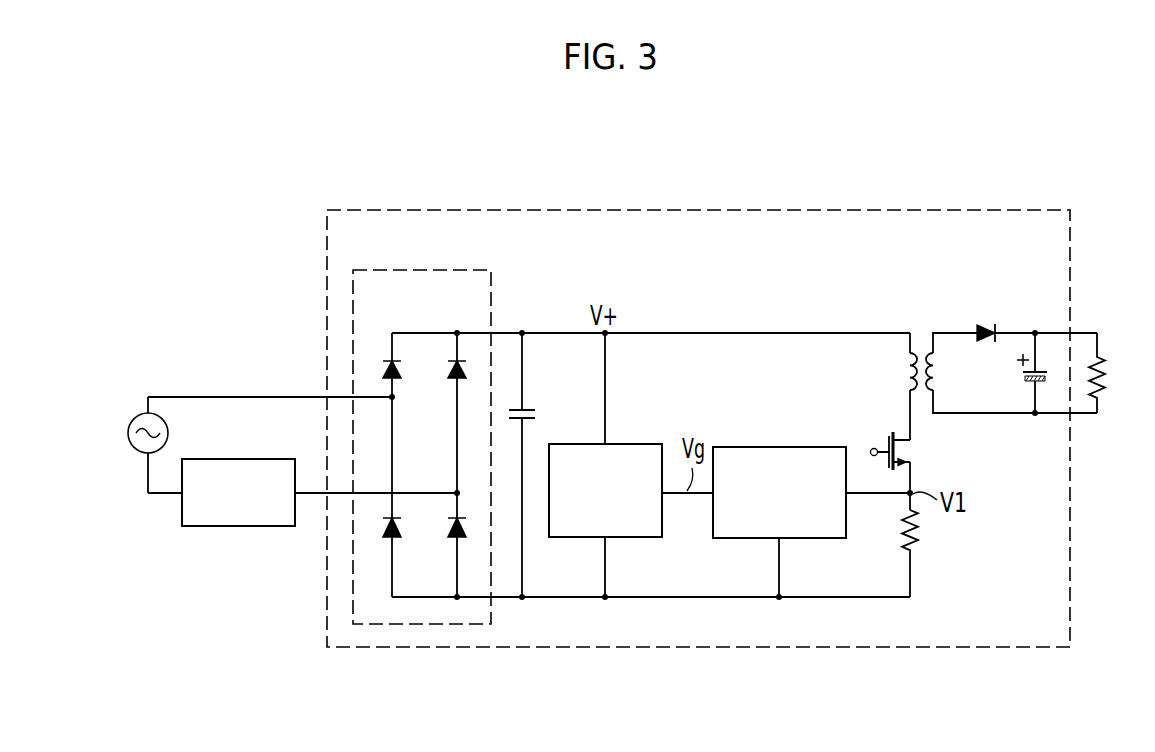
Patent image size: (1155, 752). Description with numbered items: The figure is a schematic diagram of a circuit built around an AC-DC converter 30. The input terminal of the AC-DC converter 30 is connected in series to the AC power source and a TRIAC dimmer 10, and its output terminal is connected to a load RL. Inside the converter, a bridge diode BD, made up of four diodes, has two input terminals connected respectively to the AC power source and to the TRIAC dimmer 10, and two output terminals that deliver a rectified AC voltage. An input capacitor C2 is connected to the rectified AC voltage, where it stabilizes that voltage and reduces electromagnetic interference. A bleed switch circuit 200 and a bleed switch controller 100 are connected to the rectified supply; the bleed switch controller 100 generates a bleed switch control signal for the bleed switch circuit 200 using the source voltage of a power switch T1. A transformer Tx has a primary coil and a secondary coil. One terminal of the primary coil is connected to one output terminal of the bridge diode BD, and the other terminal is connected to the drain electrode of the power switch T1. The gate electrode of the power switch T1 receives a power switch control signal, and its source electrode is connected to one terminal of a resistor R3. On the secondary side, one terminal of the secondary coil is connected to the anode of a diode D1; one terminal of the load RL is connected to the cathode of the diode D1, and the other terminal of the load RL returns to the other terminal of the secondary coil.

The TRIAC dimmer 10 is at (203, 527).
The AC-DC converter 30 is at (898, 209).
The bleed switch controller 100 is at (800, 447).
The bleed switch circuit 200 is at (558, 538).
The bridge diode BD is at (467, 270).
The input capacitor C2 is at (538, 465).
The transformer Tx is at (982, 368).
The diode D1 is at (1034, 318).
The power switch T1 is at (891, 465).
The resistor R3 is at (926, 553).
The load RL is at (1112, 373).